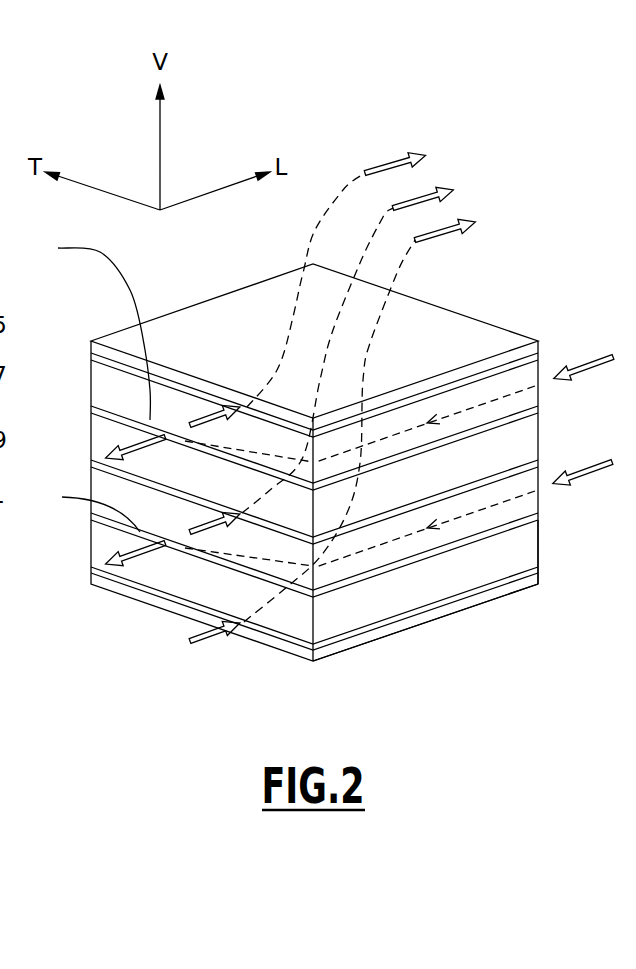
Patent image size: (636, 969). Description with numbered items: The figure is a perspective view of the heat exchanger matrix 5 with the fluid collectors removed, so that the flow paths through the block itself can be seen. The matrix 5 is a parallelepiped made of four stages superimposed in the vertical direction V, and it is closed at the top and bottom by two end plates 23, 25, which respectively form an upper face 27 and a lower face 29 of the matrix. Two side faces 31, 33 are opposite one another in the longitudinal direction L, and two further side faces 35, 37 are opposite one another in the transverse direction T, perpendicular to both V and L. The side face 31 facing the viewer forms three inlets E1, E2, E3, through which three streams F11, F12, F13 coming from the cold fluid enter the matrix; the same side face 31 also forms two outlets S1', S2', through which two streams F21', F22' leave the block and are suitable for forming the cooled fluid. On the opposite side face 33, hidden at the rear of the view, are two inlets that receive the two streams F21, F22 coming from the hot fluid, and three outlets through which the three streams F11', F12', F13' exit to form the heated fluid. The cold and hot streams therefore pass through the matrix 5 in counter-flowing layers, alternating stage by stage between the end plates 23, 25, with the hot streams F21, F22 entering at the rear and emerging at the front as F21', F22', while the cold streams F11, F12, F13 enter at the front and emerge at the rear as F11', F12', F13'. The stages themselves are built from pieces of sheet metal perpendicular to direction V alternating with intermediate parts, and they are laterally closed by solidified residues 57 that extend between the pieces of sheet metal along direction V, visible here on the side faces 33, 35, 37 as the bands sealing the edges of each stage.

The matrix 5 is at (165, 293).
The upper face 27 is at (233, 340).
The end plate 23 is at (497, 333).
The side face 37 is at (88, 380).
The solidified residues 57 is at (512, 487).
The inlet E1 is at (240, 407).
The inlet E2 is at (240, 514).
The inlet E3 is at (252, 630).
The side face 31 is at (293, 615).
The side face 33 is at (545, 545).
The side face 35 is at (420, 585).
The end plate 25 is at (497, 592).
The lower face 29 is at (373, 657).
The stream F11 is at (234, 424).
The stream F12 is at (233, 530).
The stream F13 is at (169, 630).
The stream F11' is at (360, 271).
The stream F12' is at (372, 342).
The stream F13' is at (386, 414).
The stream F21 is at (471, 406).
The stream F22 is at (471, 511).
The stream F21' is at (167, 447).
The stream F22' is at (158, 553).
The outlet S1' is at (84, 324).
The outlet S2' is at (82, 504).